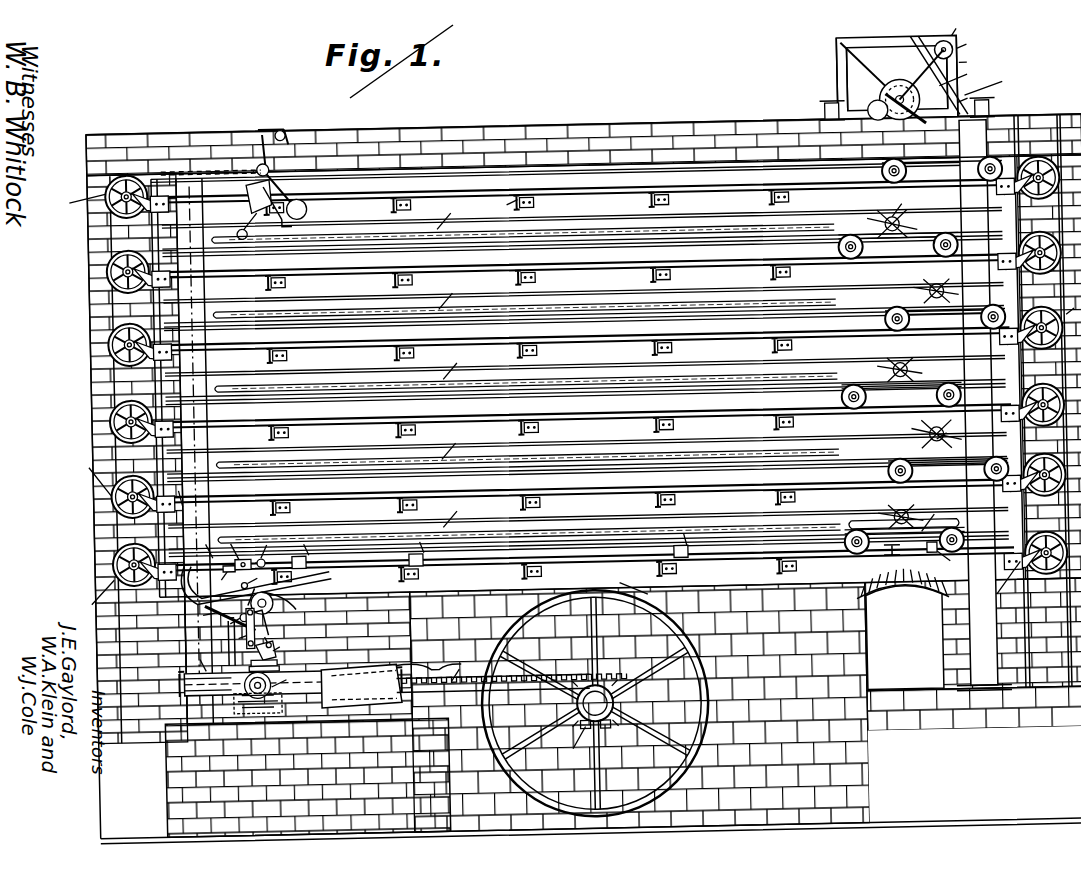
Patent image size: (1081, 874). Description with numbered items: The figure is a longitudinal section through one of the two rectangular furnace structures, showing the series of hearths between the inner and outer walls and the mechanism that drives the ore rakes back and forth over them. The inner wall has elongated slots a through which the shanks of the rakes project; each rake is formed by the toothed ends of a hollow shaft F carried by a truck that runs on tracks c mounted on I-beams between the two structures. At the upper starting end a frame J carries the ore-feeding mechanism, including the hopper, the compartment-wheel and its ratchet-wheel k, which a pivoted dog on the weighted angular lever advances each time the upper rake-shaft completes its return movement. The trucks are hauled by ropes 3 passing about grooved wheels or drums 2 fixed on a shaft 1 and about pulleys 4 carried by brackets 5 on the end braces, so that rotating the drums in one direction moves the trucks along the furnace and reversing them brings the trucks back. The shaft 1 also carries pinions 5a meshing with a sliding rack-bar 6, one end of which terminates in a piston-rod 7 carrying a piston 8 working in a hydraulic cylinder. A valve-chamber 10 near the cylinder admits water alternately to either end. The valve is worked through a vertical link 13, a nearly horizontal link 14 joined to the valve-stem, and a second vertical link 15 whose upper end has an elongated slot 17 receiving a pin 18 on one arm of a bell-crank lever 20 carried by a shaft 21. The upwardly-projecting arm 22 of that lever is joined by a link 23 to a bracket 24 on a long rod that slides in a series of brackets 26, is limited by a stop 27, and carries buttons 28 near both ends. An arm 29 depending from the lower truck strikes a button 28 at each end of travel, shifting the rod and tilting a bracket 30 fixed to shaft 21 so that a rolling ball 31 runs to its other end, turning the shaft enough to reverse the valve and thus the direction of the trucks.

The shaft 1 is at (595, 703).
The grooved wheels or drums 2 is at (594, 692).
The ropes 3 is at (105, 520).
The pulleys 4 is at (569, 385).
The brackets 5 is at (601, 390).
The pinions 5a is at (585, 742).
The sliding rack-bar 6 is at (511, 672).
The piston-rod 7 is at (361, 685).
The piston 8 is at (290, 669).
The valve-chamber 10 is at (271, 689).
The vertical link 13 is at (273, 655).
The horizontal link 14 is at (265, 641).
The vertical link 15 is at (236, 640).
The elongated slot 17 is at (242, 623).
The pin 18 is at (256, 628).
The bell-crank lever 20 is at (248, 620).
The shaft 21 is at (222, 618).
The upwardly-projecting arm 22 is at (256, 577).
The link 23 is at (224, 578).
The bracket 24 is at (236, 550).
The brackets 26 is at (529, 387).
The stop 27 is at (237, 344).
The buttons 28 is at (607, 552).
The arm 29 is at (904, 517).
The bracket 30 is at (256, 584).
The rolling ball 31 is at (273, 602).
The elongated slots or openings a is at (526, 365).
The tracks c is at (710, 214).
The hollow shaft F is at (914, 357).
The frame J is at (906, 67).
The ratchet-wheel k is at (941, 81).